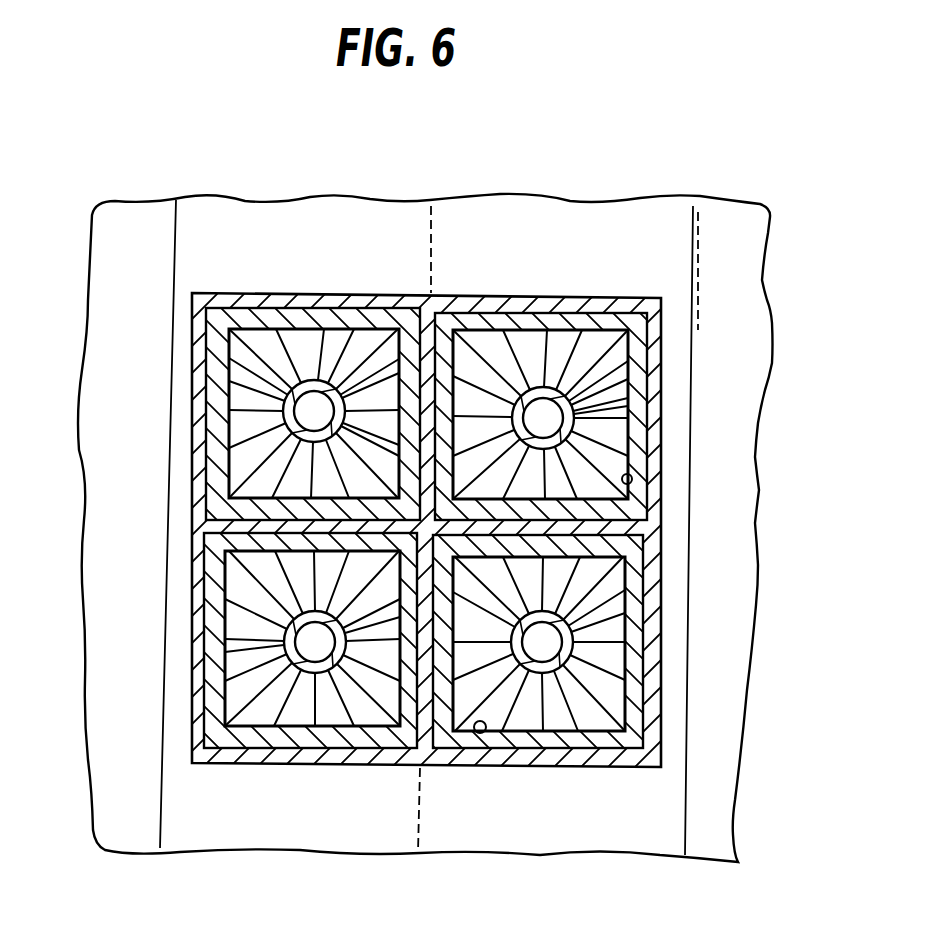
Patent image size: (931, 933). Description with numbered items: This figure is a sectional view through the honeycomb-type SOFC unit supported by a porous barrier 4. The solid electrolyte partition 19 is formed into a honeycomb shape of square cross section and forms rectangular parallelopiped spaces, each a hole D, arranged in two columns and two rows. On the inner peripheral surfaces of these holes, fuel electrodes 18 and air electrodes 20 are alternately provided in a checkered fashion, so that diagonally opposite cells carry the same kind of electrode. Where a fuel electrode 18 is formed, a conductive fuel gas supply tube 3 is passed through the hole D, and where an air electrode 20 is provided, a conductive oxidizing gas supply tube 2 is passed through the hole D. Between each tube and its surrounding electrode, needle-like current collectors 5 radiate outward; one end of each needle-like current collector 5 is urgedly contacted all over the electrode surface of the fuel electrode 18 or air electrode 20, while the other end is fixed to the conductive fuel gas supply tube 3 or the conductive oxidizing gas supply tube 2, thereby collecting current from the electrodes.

The conductive oxidizing gas supply tube 2 is at (284, 648).
The conductive fuel gas supply tube 3 is at (551, 672).
The porous barrier 4 is at (470, 218).
The needle-like current collector 5 is at (369, 709).
The fuel electrode 18 is at (638, 607).
The solid electrolyte partition 19 is at (655, 332).
The air electrode 20 is at (210, 565).
The hole D is at (481, 733).